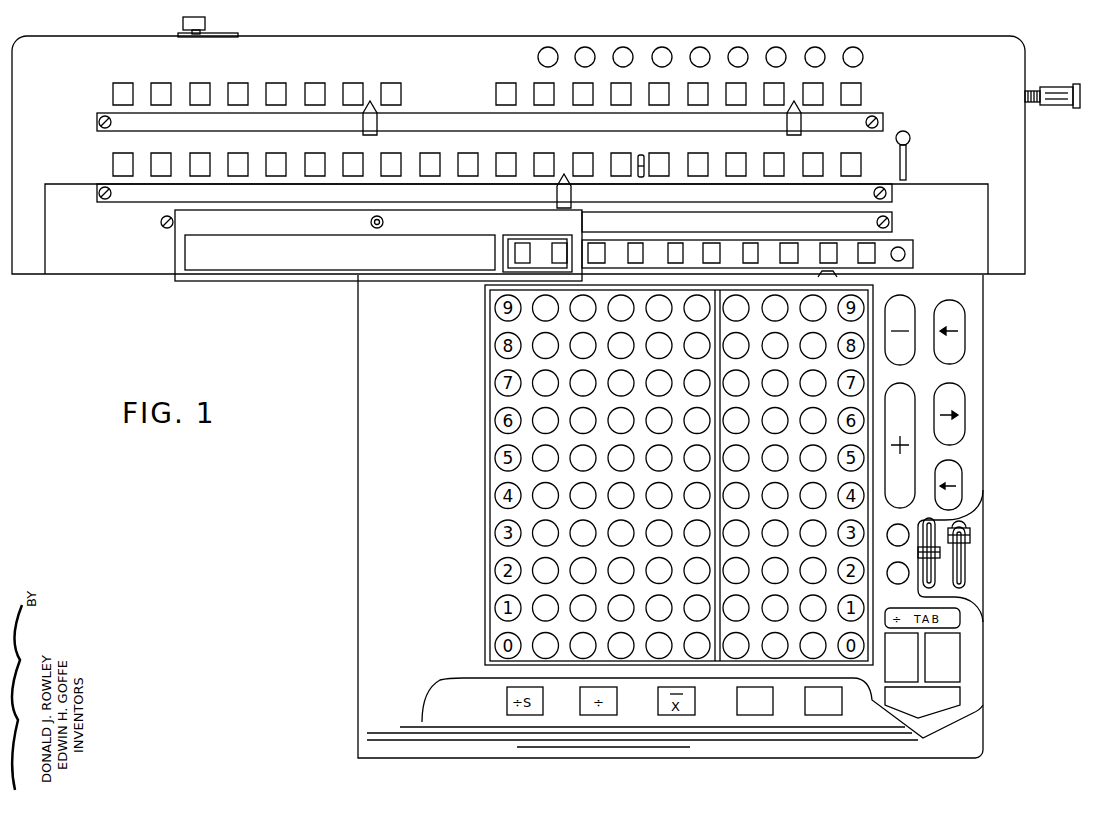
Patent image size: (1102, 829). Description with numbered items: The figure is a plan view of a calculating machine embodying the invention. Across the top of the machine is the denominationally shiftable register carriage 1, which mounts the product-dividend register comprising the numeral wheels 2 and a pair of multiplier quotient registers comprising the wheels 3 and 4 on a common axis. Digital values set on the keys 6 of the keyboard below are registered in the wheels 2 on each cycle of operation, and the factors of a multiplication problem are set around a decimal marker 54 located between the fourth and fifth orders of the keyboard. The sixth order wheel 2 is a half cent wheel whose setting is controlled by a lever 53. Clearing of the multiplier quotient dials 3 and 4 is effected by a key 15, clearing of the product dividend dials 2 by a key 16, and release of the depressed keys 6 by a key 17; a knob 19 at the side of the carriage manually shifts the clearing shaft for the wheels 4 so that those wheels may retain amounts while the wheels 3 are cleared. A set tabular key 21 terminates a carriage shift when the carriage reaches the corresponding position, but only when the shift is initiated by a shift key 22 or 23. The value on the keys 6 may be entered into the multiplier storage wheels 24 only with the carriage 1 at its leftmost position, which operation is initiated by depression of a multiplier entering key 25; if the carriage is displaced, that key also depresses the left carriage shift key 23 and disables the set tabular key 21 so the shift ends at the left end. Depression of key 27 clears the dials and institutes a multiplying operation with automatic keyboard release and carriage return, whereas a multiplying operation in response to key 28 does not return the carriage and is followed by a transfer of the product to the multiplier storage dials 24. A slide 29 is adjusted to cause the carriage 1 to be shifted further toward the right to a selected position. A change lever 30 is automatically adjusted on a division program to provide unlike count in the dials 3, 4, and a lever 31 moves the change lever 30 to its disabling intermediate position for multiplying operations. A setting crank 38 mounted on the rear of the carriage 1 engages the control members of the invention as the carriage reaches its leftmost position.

The register carriage 1 is at (147, 263).
The numeral wheels 2 is at (160, 164).
The multiplier quotient wheels 3 is at (355, 95).
The multiplier quotient wheels 4 is at (545, 98).
The keys 6 is at (498, 497).
The key 15 is at (885, 665).
The key 16 is at (960, 668).
The key 17 is at (960, 692).
The knob 19 is at (1060, 106).
The set tabular key 21 is at (662, 57).
The shift key 22 is at (948, 402).
The left carriage shift key 23 is at (952, 325).
The multiplier storage wheels 24 is at (868, 258).
The multiplier entering key 25 is at (962, 492).
The key 27 is at (836, 717).
The key 28 is at (760, 717).
The slide 29 is at (292, 230).
The change lever 30 is at (937, 550).
The lever 31 is at (958, 530).
The setting crank 38 is at (185, 25).
The lever 53 is at (641, 156).
The decimal marker 54 is at (728, 662).